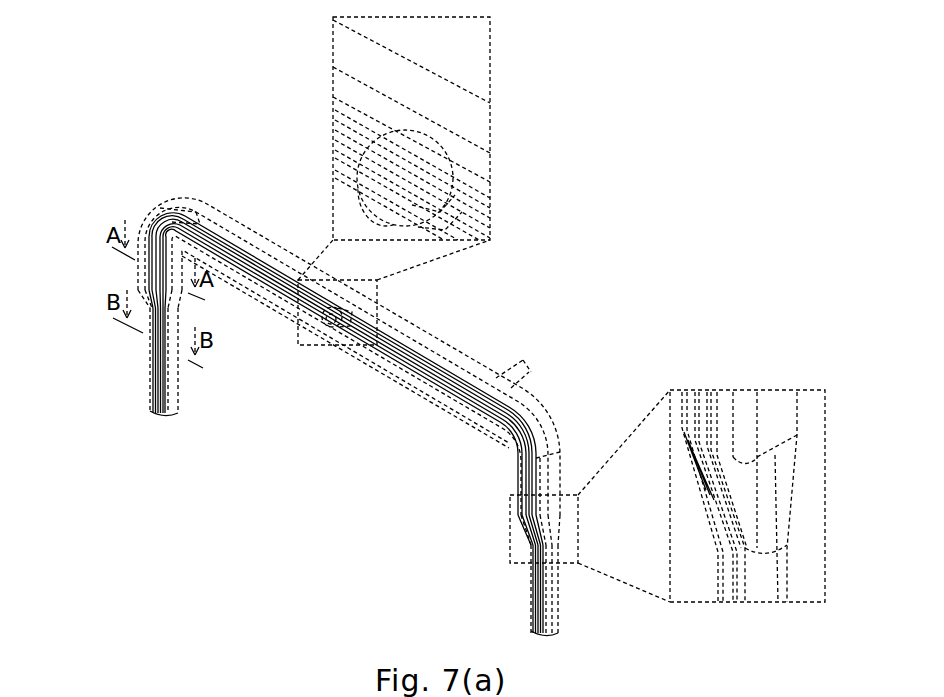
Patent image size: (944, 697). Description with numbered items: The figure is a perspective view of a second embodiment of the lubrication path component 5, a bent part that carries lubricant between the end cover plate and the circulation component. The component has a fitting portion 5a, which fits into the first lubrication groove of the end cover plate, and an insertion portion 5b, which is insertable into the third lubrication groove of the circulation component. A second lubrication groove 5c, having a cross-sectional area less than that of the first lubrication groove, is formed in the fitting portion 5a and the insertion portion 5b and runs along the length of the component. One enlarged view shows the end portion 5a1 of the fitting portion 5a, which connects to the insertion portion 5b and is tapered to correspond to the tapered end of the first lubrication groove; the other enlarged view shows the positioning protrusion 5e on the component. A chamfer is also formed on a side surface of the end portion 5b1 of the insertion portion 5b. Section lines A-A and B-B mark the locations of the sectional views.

The lubrication path component 5 is at (302, 511).
The fitting portion 5a is at (483, 377).
The end portion of the fitting portion 5a1 is at (772, 507).
The insertion portion 5b is at (167, 387).
The end portion of the insertion portion 5b1 is at (557, 630).
The second lubrication groove 5c is at (410, 363).
The positioning protrusion 5e is at (327, 330).